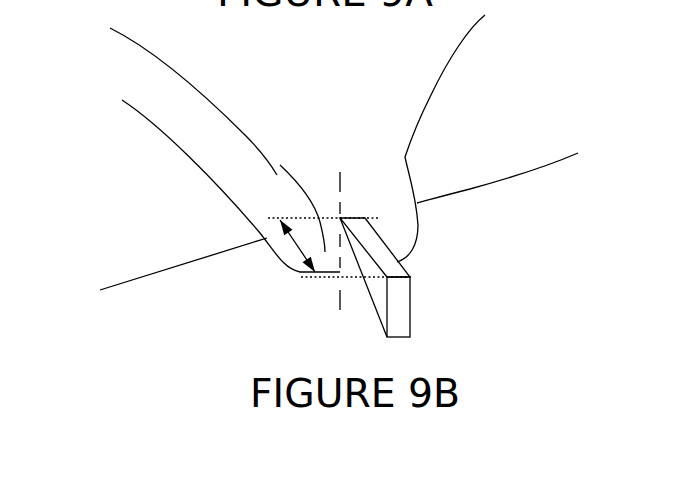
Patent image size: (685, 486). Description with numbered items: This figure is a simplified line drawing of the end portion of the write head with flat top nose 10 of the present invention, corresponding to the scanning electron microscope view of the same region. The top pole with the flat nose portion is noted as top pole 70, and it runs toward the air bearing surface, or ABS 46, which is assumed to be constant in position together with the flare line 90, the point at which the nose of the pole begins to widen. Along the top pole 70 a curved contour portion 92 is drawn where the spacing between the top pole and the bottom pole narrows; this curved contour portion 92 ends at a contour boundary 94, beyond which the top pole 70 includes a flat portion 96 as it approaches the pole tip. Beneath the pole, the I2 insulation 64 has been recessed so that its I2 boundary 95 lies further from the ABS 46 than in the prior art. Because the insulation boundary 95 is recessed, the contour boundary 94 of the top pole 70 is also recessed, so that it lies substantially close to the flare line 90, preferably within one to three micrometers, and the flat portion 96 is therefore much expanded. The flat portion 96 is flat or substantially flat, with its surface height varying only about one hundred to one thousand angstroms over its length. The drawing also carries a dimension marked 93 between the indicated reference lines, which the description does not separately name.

The write head with flat top nose 10 is at (110, 79).
The ABS 46 is at (403, 295).
The I2 insulation 64 is at (178, 219).
The top pole with flat nose portion 70 is at (348, 96).
The flare line 90 is at (329, 185).
The curved contour portion 92 is at (367, 187).
The dimension 93 is at (292, 242).
The contour boundary 94 is at (378, 209).
The I2 boundary 95 is at (163, 262).
The flat portion 96 is at (398, 270).